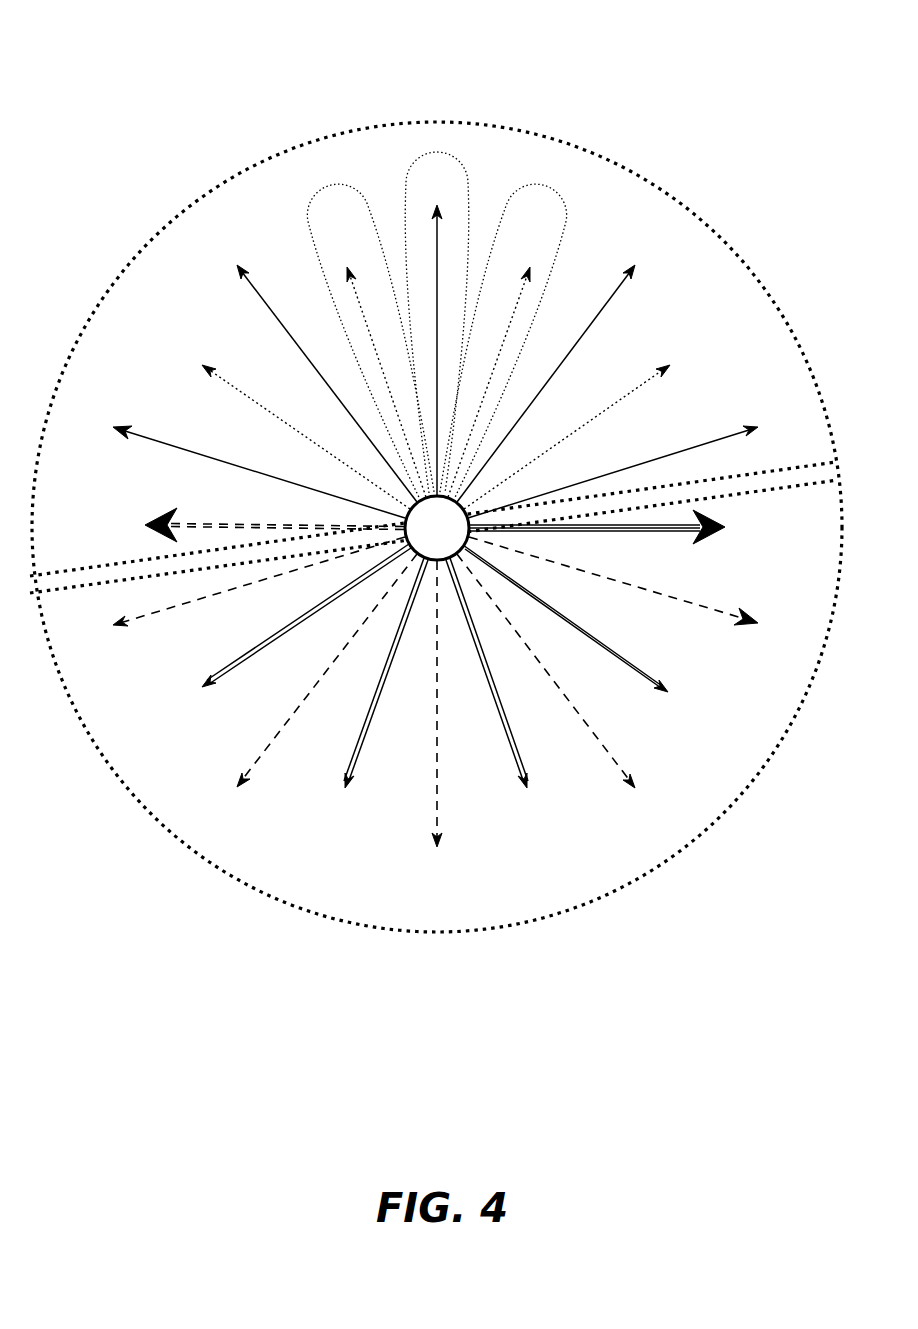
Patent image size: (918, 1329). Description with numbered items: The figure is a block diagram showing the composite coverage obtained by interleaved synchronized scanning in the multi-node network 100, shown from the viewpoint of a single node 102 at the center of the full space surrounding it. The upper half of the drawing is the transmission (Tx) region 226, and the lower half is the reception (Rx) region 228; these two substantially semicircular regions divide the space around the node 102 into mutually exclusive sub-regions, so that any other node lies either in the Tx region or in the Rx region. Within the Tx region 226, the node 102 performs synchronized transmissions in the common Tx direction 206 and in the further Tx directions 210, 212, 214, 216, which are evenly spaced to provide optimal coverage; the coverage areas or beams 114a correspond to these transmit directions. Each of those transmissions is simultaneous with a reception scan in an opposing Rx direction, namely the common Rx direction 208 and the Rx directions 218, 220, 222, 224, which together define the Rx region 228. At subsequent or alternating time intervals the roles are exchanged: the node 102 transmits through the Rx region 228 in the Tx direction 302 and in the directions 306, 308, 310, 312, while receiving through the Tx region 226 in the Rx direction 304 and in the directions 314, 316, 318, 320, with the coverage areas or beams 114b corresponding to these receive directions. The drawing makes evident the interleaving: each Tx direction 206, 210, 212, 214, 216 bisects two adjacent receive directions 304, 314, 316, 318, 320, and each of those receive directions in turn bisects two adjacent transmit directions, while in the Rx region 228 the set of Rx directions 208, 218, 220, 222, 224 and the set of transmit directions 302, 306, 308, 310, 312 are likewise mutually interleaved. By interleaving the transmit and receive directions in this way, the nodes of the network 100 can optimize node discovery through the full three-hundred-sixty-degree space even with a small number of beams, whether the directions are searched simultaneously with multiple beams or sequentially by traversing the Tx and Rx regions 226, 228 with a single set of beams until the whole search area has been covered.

The multi-node network 100 is at (150, 48).
The node 102 is at (419, 541).
The coverage area/beam 114a is at (418, 170).
The coverage area/beam 114b is at (306, 230).
The common transmit (Tx) direction 206 is at (259, 472).
The common receiving (Rx) direction 208 is at (613, 581).
The Tx direction 210 is at (327, 383).
The Tx direction 212 is at (436, 350).
The Tx direction 214 is at (546, 383).
The Tx direction 216 is at (613, 472).
The Rx direction 218 is at (546, 671).
The Rx direction 220 is at (437, 704).
The Rx direction 222 is at (327, 670).
The Rx direction 224 is at (259, 582).
The transmission (Tx) region 226 is at (172, 322).
The reception (Rx) region 228 is at (488, 903).
The Tx direction 302 is at (597, 528).
The Rx direction 304 is at (274, 524).
The Rx direction (transmit) 306 is at (565, 618).
The Rx direction (transmit) 308 is at (487, 673).
The Tx direction 310 is at (386, 673).
The Rx direction (transmit) 312 is at (306, 615).
The Tx direction (receive) 314 is at (306, 437).
The Tx direction (receive) 316 is at (386, 382).
The Tx direction (receive) 318 is at (489, 382).
The Tx direction (receive) 320 is at (567, 437).